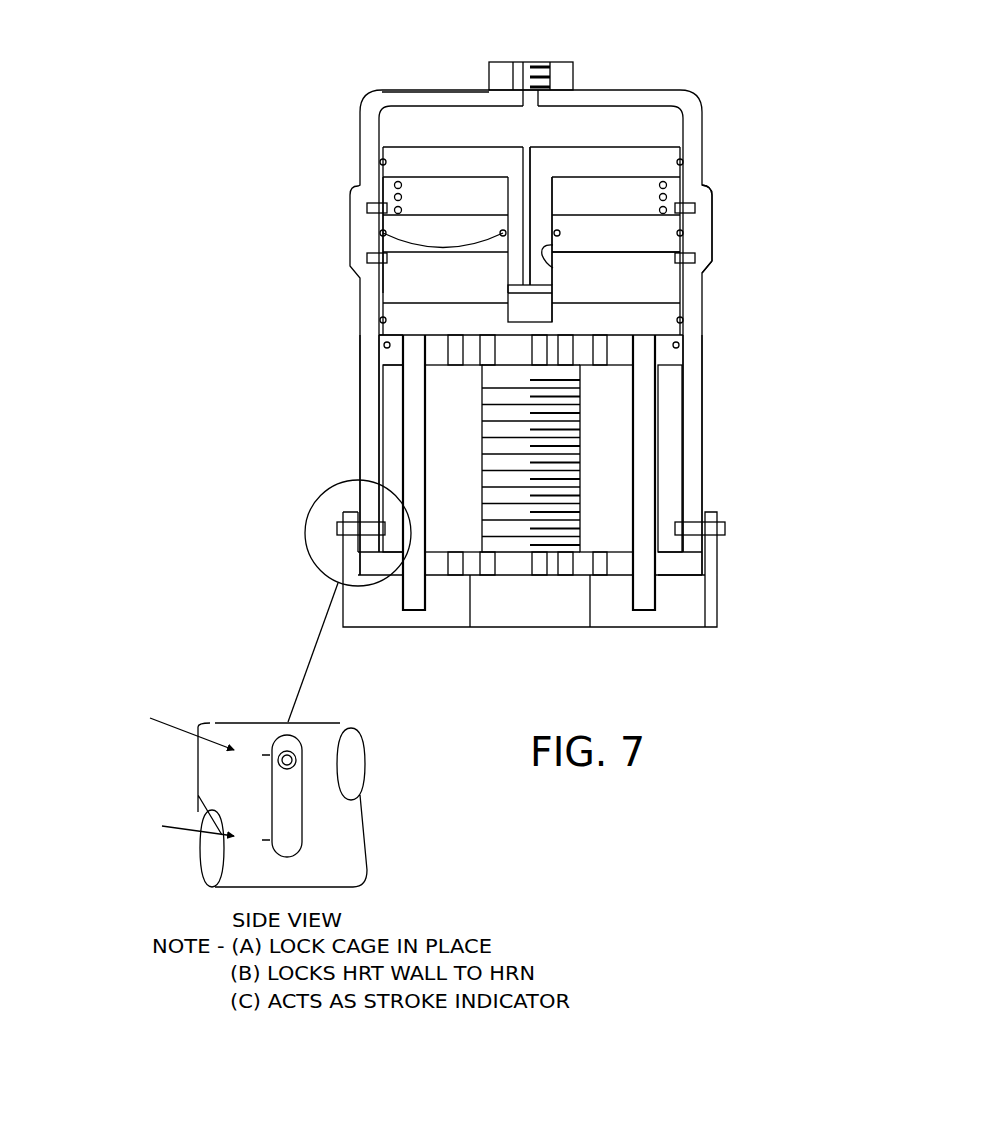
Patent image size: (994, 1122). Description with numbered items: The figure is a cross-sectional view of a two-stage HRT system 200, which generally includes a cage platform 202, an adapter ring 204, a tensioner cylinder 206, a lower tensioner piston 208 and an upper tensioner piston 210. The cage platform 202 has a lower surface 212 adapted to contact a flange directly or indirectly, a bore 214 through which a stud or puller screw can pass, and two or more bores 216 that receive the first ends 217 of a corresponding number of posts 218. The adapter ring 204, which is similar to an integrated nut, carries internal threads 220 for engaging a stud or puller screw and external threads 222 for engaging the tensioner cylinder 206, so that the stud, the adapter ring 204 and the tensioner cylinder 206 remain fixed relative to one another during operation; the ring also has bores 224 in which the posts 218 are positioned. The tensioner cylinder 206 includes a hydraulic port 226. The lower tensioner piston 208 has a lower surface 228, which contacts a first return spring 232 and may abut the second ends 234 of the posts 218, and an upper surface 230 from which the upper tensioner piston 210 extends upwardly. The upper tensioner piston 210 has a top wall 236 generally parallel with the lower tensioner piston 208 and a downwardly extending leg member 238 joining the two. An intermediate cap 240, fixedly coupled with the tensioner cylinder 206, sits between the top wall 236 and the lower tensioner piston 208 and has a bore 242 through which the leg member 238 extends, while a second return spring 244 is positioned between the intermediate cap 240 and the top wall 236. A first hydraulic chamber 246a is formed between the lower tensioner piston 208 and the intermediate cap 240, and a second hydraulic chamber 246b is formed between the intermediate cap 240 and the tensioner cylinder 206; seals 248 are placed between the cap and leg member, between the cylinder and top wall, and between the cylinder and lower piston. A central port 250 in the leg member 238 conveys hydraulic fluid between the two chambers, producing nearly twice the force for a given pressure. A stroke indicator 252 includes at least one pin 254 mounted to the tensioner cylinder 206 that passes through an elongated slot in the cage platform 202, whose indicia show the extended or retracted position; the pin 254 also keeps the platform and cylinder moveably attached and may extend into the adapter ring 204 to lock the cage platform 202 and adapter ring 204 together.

The HRT system 200 is at (318, 46).
The cage platform 202 is at (705, 578).
The adapter ring 204 is at (675, 457).
The tensioner cylinder 206 is at (656, 91).
The lower tensioner piston 208 is at (665, 325).
The upper tensioner piston 210 is at (683, 166).
The lower surface 212 is at (680, 630).
The bore 214 is at (487, 620).
The bores 216 is at (657, 597).
The first ends 217 is at (402, 605).
The posts 218 is at (413, 427).
The internal threads 220 is at (547, 548).
The external threads 222 is at (683, 485).
The bores 224 is at (650, 433).
The hydraulic port 226 is at (538, 62).
The lower surface 228 is at (680, 352).
The upper surface 230 is at (650, 302).
The first return spring 232 is at (383, 350).
The second ends 234 is at (403, 368).
The top wall 236 is at (417, 152).
The leg member 238 is at (550, 187).
The intermediate cap 240 is at (672, 233).
The bore 242 is at (555, 262).
The second return spring 244 is at (710, 190).
The first hydraulic chamber 246a is at (705, 268).
The second hydraulic chamber 246b is at (450, 123).
The seals 248 is at (380, 320).
The central port 250 is at (553, 157).
The stroke indicator 252 is at (197, 713).
The pin 254 is at (328, 526).